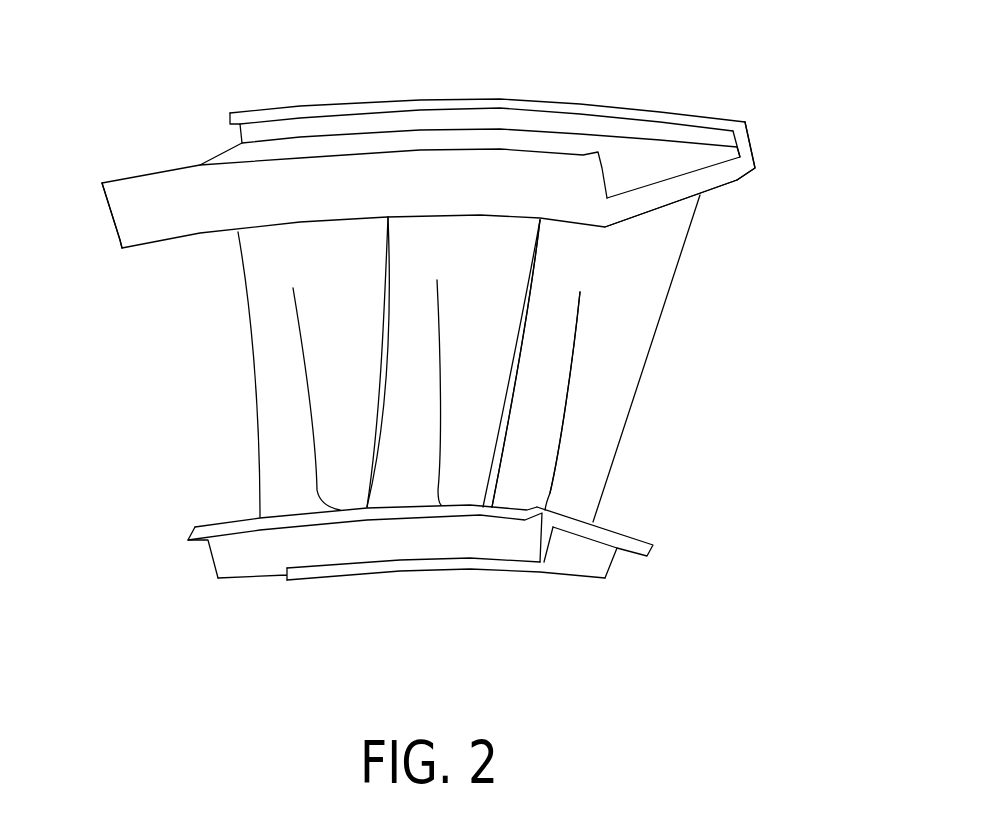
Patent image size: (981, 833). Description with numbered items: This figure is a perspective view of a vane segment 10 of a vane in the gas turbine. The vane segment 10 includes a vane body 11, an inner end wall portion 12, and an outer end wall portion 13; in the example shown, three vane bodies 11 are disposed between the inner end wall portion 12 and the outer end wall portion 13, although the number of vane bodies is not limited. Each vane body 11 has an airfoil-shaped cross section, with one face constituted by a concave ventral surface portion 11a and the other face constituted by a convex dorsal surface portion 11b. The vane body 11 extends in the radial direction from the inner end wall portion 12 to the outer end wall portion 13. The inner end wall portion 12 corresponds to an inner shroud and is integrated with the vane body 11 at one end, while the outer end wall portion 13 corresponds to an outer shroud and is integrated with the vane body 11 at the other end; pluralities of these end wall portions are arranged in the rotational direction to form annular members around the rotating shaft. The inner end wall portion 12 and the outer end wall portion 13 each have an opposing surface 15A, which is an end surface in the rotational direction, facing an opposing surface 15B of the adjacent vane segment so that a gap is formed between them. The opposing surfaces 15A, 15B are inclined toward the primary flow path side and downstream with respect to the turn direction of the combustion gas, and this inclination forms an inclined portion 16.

The vane segment 10 is at (600, 86).
The vane body 11 is at (413, 410).
The ventral surface portion 11a is at (605, 390).
The dorsal surface portion 11b is at (513, 440).
The inner end wall portion 12 is at (460, 538).
The outer end wall portion 13 is at (470, 140).
The opposing surface 15A is at (745, 147).
The opposing surface 15B is at (118, 242).
The inclined portion 16 is at (748, 168).